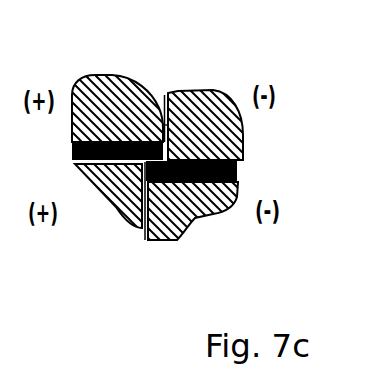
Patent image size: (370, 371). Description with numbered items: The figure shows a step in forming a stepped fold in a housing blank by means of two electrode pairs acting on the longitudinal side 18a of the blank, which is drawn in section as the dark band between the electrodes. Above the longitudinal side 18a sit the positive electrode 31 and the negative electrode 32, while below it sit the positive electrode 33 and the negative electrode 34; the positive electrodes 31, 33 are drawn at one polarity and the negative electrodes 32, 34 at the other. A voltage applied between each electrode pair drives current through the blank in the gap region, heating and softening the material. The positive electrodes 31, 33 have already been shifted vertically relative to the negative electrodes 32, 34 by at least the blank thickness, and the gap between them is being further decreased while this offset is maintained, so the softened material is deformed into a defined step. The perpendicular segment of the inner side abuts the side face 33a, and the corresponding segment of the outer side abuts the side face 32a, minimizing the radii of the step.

The positive electrode 31 is at (110, 100).
The negative electrode 32 is at (198, 101).
The side face 32a is at (164, 95).
The longitudinal side 18a is at (233, 168).
The positive electrode 33 is at (105, 195).
The side face 33a is at (147, 238).
The negative electrode 34 is at (212, 215).